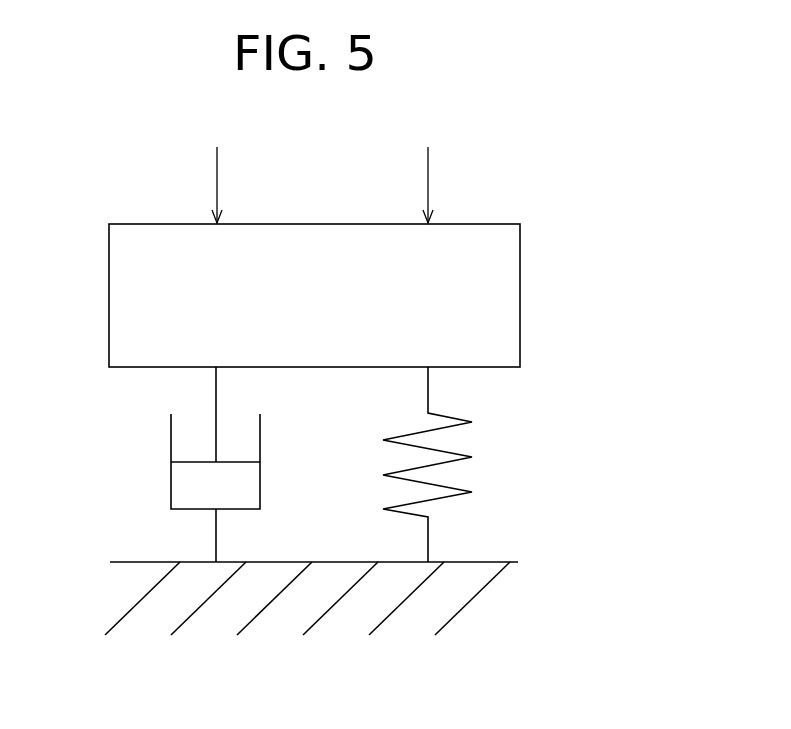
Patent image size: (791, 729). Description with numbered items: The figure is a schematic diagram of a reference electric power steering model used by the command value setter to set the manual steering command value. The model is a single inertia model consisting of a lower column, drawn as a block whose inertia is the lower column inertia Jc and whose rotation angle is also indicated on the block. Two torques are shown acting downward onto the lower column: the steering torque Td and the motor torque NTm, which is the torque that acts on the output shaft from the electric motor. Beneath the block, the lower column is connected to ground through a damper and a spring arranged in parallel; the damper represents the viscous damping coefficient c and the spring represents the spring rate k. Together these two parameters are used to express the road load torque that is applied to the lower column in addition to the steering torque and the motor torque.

The inertia of the lower column Jc is at (314, 295).
The steering torque Td is at (216, 170).
The torque from the electric motor NTm is at (428, 170).
The viscous damping coefficient c is at (197, 464).
The spring rate k is at (447, 464).